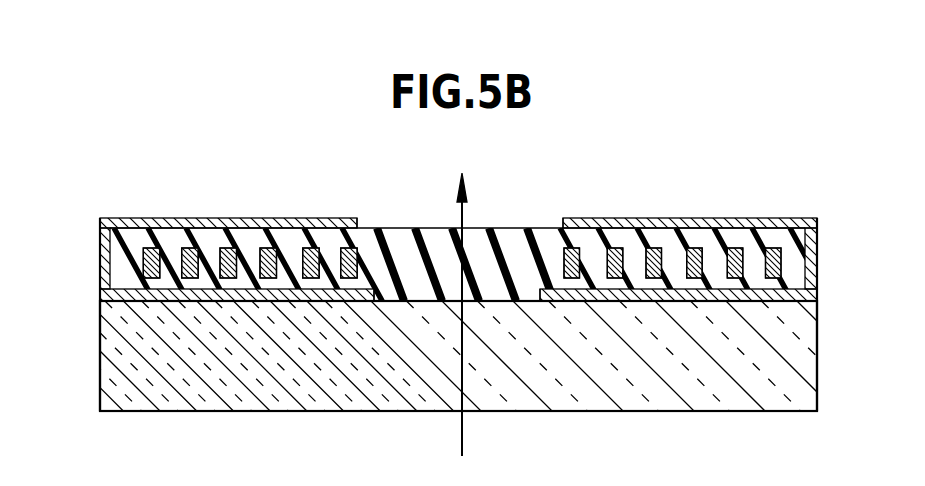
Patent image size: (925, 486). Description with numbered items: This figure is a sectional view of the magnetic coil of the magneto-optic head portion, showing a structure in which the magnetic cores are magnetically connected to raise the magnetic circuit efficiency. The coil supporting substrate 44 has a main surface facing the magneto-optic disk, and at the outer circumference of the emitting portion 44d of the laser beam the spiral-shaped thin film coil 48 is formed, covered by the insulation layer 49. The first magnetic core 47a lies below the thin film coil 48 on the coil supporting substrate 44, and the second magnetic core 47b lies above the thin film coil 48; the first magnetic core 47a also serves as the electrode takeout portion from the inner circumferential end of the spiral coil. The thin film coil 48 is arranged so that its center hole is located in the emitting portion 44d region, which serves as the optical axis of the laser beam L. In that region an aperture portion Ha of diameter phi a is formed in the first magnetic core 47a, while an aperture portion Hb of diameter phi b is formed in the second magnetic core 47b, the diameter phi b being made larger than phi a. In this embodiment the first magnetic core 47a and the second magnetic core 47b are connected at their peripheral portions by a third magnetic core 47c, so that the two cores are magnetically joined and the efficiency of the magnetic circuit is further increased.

The coil supporting substrate 44 is at (698, 400).
The emitting portion 44d is at (493, 297).
The first magnetic core 47a is at (817, 292).
The second magnetic core 47b is at (202, 218).
The third magnetic core 47c is at (100, 250).
The thin film coil 48 is at (270, 249).
The insulation layer 49 is at (132, 257).
The laser beam L is at (462, 443).
The aperture portion Ha is at (377, 289).
The aperture portion Hb is at (365, 218).